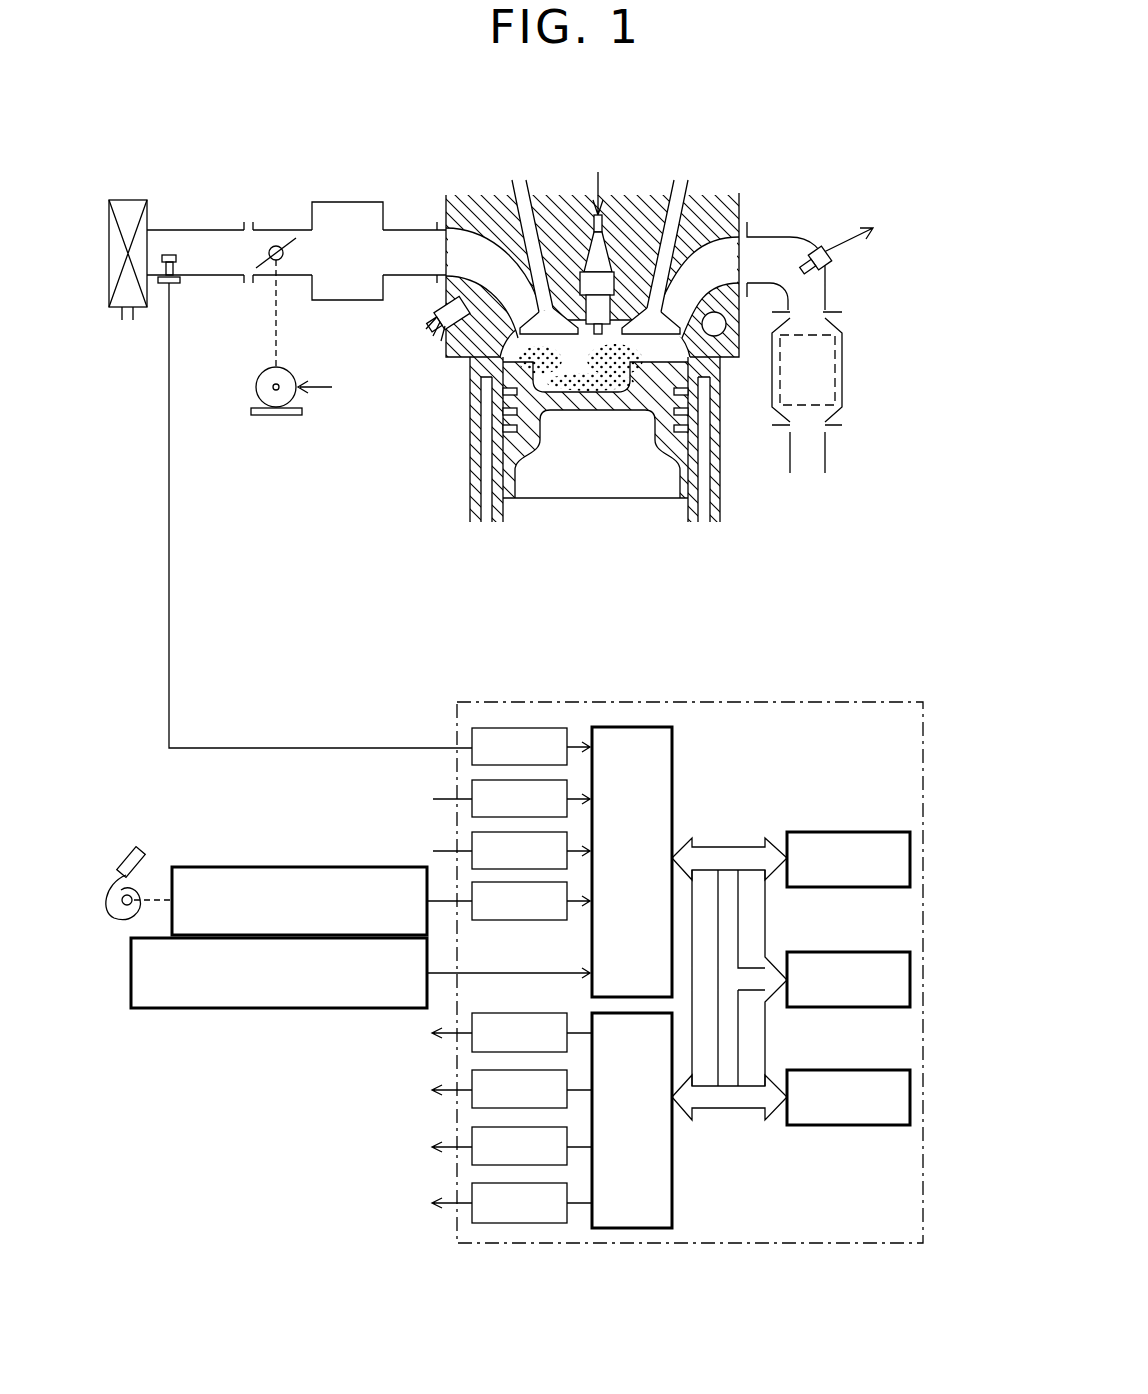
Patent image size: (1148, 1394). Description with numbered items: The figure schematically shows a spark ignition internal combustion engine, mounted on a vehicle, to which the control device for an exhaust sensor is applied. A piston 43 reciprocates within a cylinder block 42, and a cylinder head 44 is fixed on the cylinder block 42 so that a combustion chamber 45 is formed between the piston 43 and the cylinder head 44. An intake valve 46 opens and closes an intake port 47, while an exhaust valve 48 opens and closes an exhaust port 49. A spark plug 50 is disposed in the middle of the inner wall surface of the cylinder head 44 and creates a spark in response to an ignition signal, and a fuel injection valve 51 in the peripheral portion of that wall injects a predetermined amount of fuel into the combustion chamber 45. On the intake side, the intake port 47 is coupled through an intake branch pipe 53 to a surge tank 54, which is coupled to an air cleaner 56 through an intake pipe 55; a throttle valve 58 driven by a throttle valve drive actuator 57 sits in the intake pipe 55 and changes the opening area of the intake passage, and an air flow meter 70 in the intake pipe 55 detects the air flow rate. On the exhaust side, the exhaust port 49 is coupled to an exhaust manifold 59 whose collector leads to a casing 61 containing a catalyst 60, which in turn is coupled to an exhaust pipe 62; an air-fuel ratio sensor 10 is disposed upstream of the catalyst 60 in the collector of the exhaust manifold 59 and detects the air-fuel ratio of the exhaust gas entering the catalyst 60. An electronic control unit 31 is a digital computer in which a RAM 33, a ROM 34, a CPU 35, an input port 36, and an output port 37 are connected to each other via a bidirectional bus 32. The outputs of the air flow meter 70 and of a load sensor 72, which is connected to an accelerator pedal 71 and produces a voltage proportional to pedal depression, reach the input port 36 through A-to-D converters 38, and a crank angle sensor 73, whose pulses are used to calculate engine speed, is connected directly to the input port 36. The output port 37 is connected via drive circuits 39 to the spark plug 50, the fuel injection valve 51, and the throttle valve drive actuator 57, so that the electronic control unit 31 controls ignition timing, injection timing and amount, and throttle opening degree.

The air-fuel ratio sensor 10 is at (832, 262).
The electronic control unit 31 is at (939, 800).
The bidirectional bus 32 is at (728, 847).
The random access memory 33 is at (870, 832).
The read only memory 34 is at (870, 952).
The microprocessor 35 is at (860, 1070).
The input port 36 is at (674, 739).
The output port 37 is at (674, 1187).
The analog-to-digital converters 38 is at (472, 890).
The drive circuits 39 is at (472, 1193).
The cylinder block 42 is at (716, 445).
The piston 43 is at (530, 446).
The cylinder head 44 is at (713, 245).
The combustion chamber 45 is at (650, 346).
The intake valve 46 is at (539, 228).
The intake port 47 is at (478, 246).
The exhaust valve 48 is at (656, 236).
The exhaust port 49 is at (757, 258).
The spark plug 50 is at (601, 252).
The fuel injection valve 51 is at (418, 314).
The intake branch pipe 53 is at (410, 246).
The surge tank 54 is at (347, 286).
The intake pipe 55 is at (258, 278).
The air cleaner 56 is at (129, 200).
The throttle valve drive actuator 57 is at (255, 387).
The throttle valve 58 is at (292, 252).
The exhaust manifold 59 is at (793, 229).
The catalyst 60 is at (848, 338).
The casing 61 is at (846, 384).
The exhaust pipe 62 is at (828, 455).
The air flow meter 70 is at (170, 253).
The accelerator pedal 71 is at (132, 852).
The load sensor 72 is at (255, 866).
The crank angle sensor 73 is at (272, 1010).